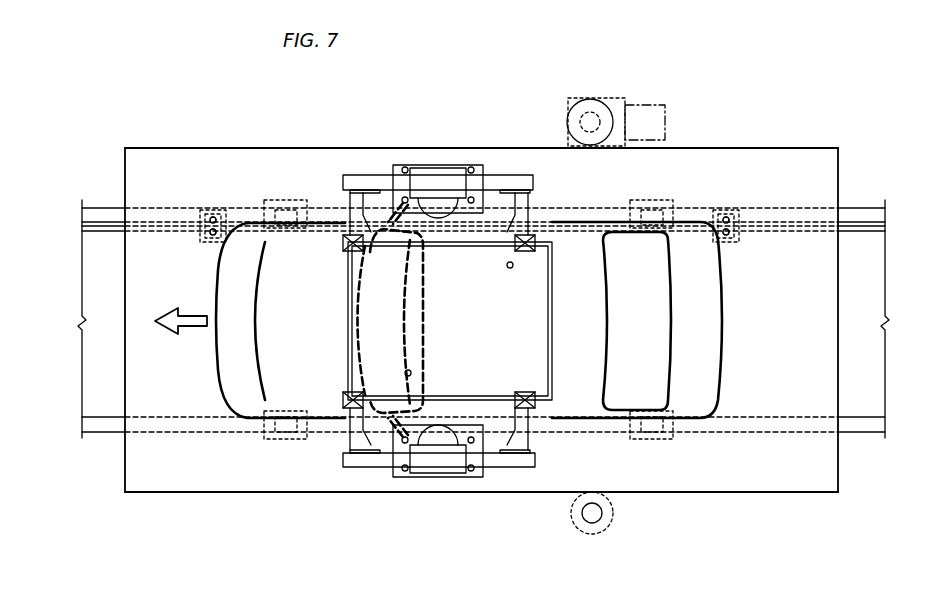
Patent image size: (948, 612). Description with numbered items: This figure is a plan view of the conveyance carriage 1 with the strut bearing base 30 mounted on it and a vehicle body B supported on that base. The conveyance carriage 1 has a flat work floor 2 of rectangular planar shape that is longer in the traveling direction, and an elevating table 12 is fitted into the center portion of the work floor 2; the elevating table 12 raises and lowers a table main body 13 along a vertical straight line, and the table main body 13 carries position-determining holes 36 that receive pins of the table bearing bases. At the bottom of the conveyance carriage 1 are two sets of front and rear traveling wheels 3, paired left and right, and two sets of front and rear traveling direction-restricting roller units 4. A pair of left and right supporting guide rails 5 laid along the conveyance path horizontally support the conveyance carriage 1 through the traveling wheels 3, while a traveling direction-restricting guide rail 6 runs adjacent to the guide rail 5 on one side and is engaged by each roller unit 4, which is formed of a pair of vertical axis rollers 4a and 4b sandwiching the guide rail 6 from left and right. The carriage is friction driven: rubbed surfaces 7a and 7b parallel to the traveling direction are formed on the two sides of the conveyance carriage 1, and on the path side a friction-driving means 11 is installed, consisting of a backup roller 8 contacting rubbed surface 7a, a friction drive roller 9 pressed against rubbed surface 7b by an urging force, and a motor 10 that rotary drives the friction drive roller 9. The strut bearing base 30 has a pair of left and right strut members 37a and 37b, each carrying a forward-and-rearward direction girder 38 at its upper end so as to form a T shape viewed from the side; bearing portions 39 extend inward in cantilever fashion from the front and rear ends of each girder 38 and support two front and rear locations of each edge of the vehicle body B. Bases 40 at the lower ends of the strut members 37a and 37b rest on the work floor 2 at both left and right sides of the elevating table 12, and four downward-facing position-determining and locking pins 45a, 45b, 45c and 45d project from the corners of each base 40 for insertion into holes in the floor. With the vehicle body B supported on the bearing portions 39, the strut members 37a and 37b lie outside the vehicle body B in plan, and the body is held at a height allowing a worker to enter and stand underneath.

The conveyance carriage 1 is at (768, 146).
The flat work floor 2 is at (770, 387).
The traveling wheels 3 is at (290, 208).
The traveling direction-restricting roller unit 4 is at (213, 205).
The vertical axis roller 4a is at (210, 236).
The vertical axis roller 4b is at (210, 220).
The supporting guide rails 5 is at (105, 209).
The traveling direction-restricting guide rail 6 is at (95, 228).
The rubbed surface 7a is at (650, 492).
The rubbed surface 7b is at (563, 146).
The backup roller 8 is at (585, 526).
The friction drive roller 9 is at (600, 105).
The motor 10 is at (645, 106).
The friction-driving means 11 is at (588, 98).
The elevating table 12 is at (553, 318).
The table main body 13 is at (520, 328).
The strut bearing base 30 is at (441, 181).
The position-determining holes 36 is at (507, 265).
The strut member 37a is at (438, 475).
The strut member 37b is at (438, 167).
The forward-and-rearward direction girder 38 is at (490, 178).
The bearing portions 39 is at (343, 243).
The bases 40 is at (440, 214).
The position-determining and locking pin 45a is at (405, 167).
The position-determining and locking pin 45b is at (402, 200).
The position-determining and locking pin 45c is at (474, 201).
The position-determining and locking pin 45d is at (471, 167).
The vehicle body B is at (715, 322).